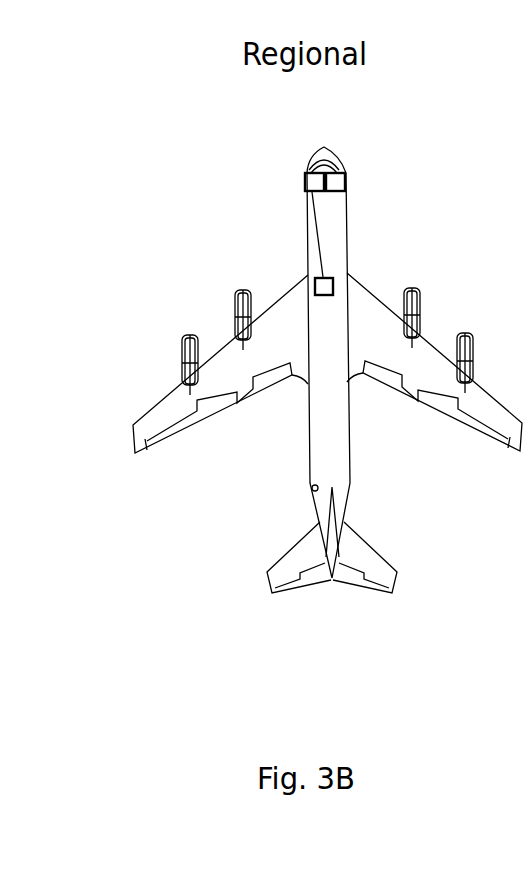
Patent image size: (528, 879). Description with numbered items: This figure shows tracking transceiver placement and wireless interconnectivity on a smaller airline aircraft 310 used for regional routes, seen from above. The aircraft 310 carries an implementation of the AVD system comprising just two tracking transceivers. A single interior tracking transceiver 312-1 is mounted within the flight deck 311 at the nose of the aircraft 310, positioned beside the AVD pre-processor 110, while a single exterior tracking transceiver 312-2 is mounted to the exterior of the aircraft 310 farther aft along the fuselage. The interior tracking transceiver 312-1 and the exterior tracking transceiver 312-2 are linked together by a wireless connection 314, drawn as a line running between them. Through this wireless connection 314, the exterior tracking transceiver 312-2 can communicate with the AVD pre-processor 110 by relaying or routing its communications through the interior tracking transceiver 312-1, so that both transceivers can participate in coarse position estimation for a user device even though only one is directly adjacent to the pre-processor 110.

The aircraft 310 is at (162, 150).
The flight deck 311 is at (325, 148).
The interior tracking transceiver 312-1 is at (305, 188).
The exterior tracking transceiver 312-2 is at (310, 282).
The AVD pre-processor 110 is at (347, 182).
The wireless connection 314 is at (320, 250).